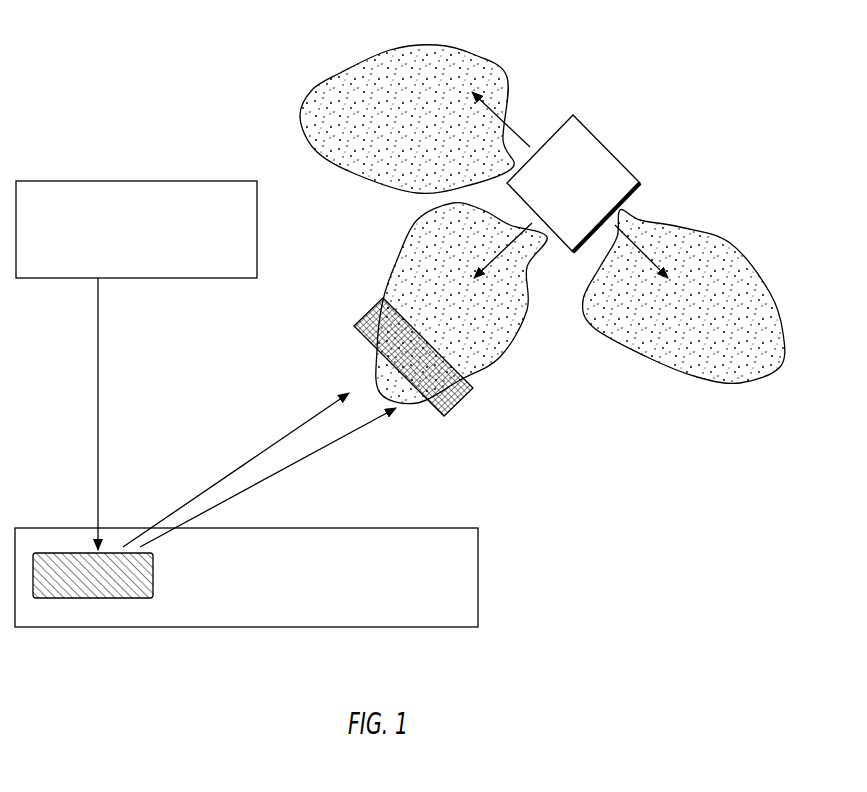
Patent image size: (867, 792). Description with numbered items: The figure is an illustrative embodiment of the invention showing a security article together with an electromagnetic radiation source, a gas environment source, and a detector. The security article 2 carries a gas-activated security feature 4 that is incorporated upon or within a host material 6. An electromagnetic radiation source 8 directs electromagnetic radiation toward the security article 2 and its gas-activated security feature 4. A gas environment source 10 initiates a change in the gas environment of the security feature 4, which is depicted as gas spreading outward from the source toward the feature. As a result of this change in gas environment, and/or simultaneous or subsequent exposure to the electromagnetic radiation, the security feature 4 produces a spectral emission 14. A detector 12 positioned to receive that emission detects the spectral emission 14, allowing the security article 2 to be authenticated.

The security article 2 is at (246, 626).
The gas-activated security feature 4 is at (155, 566).
The host material 6 is at (338, 607).
The electromagnetic radiation source 8 is at (105, 180).
The gas environment source 10 is at (622, 136).
The detector 12 is at (470, 411).
The spectral emission 14 is at (218, 482).